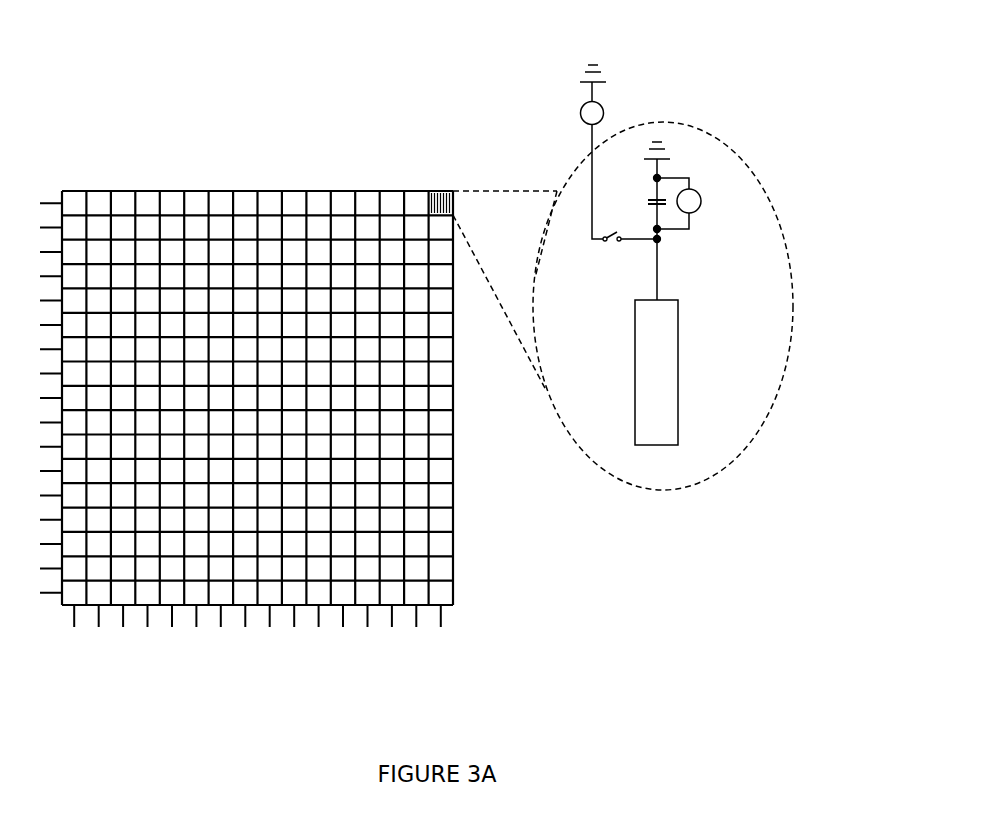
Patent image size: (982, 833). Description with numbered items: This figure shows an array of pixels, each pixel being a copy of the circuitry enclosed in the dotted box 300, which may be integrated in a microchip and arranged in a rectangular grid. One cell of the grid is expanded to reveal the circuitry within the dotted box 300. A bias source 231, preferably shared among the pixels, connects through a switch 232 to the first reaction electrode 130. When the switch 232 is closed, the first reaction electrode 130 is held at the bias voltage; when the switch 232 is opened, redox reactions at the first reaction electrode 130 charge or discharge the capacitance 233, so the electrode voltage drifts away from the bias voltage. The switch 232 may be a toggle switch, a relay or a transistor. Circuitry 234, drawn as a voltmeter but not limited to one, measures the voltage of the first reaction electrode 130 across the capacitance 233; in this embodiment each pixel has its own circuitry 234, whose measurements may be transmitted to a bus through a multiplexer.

The first reaction electrode 130 is at (681, 342).
The bias source 231 is at (580, 111).
The switch 232 is at (608, 231).
The capacitance 233 is at (651, 198).
The circuitry 234 is at (701, 190).
The dotted box 300 is at (692, 482).